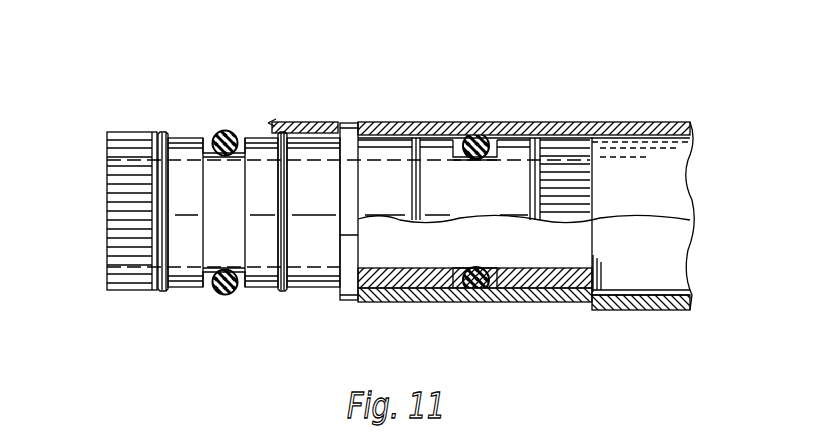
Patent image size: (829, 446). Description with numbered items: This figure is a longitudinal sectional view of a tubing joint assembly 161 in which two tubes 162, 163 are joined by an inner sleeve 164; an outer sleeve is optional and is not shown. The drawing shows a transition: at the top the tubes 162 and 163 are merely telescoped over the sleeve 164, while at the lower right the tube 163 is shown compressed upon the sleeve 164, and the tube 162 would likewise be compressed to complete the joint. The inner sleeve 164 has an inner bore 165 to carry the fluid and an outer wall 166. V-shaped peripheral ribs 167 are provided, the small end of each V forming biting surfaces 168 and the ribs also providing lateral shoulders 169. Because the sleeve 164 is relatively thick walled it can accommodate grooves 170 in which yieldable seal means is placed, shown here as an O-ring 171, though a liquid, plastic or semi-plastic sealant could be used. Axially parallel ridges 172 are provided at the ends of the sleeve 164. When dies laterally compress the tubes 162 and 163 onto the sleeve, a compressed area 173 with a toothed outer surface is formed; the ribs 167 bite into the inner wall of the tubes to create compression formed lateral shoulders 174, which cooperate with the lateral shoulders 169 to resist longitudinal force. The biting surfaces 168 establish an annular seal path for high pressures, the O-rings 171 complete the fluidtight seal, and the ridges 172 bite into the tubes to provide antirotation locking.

The tubing joint assembly 161 is at (538, 102).
The tube 162 is at (302, 122).
The tube 163 is at (440, 122).
The inner sleeve 164 is at (191, 288).
The inner bore 165 is at (118, 158).
The outer wall 166 is at (188, 135).
The peripheral ribs 167 is at (282, 293).
The biting surfaces 168 is at (418, 135).
The lateral shoulders 169 is at (283, 293).
The grooves 170 is at (232, 130).
The O-ring 171 is at (228, 295).
The axially parallel ridges 172 is at (116, 222).
The compressed area 173 is at (490, 298).
The compression formed lateral shoulders 174 is at (425, 296).